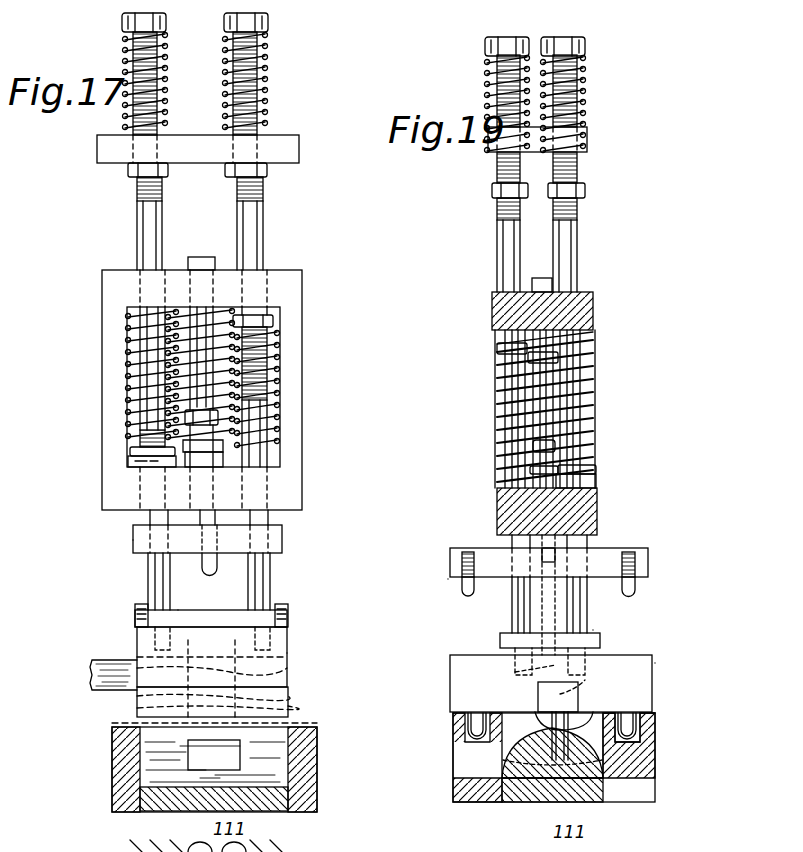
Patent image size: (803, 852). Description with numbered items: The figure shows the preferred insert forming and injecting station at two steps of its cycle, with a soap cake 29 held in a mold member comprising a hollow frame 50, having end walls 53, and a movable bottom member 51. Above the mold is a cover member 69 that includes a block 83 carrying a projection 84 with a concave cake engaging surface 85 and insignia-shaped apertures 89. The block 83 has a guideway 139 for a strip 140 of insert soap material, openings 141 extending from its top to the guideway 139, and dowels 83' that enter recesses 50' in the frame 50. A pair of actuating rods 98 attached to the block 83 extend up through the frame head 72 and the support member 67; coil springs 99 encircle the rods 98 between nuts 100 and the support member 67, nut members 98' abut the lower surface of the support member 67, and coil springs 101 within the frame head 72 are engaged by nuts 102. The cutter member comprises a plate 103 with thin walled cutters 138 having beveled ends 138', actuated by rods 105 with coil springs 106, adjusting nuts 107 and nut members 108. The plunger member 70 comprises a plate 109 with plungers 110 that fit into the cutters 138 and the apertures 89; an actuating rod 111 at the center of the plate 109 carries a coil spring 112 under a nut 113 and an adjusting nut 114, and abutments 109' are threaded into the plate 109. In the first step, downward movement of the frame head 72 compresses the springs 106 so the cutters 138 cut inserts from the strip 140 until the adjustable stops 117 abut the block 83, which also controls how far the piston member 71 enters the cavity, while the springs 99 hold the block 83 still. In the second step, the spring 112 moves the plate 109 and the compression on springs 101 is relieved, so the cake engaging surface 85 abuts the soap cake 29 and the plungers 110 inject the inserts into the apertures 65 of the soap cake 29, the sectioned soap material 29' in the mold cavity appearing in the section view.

In FIG. 17, the nuts 100 is at (225, 22).
In FIG. 19, the nuts 100 is at (552, 40).
In FIG. 17, the coil springs 99 is at (227, 75).
In FIG. 19, the coil springs 99 is at (586, 80).
In FIG. 17, the support member 67 is at (193, 142).
In FIG. 19, the support member 67 is at (587, 136).
In FIG. 17, the nut members 98' is at (197, 183).
In FIG. 19, the nut members 98' is at (544, 183).
In FIG. 17, the actuating rods 98 is at (198, 151).
In FIG. 19, the actuating rods 98 is at (537, 173).
In FIG. 17, the actuating rod 111 is at (258, 398).
In FIG. 19, the actuating rod 111 is at (535, 280).
In FIG. 17, the frame head 72 is at (300, 318).
In FIG. 19, the frame head 72 is at (593, 308).
In FIG. 17, the nuts 102 is at (270, 320).
In FIG. 19, the nuts 102 is at (497, 348).
In FIG. 17, the actuating rods 105 is at (148, 395).
In FIG. 19, the actuating rods 105 is at (595, 346).
In FIG. 17, the coil springs 106 is at (128, 342).
In FIG. 19, the coil springs 106 is at (595, 374).
In FIG. 17, the coil spring 112 is at (243, 350).
In FIG. 19, the coil spring 112 is at (497, 390).
In FIG. 17, the coil springs 101 is at (262, 370).
In FIG. 19, the coil springs 101 is at (497, 421).
In FIG. 17, the nut 113 is at (238, 425).
In FIG. 19, the nut 113 is at (497, 451).
In FIG. 17, the adjusting nut 114 is at (225, 455).
In FIG. 19, the adjusting nut 114 is at (535, 483).
In FIG. 17, the nuts 107 is at (133, 448).
In FIG. 19, the nuts 107 is at (598, 462).
In FIG. 17, the nut members 108 is at (128, 463).
In FIG. 19, the nut members 108 is at (598, 483).
In FIG. 17, the plate 109 is at (230, 531).
In FIG. 19, the plate 109 is at (530, 555).
In FIG. 17, the plunger member 70 is at (131, 540).
In FIG. 19, the plunger member 70 is at (447, 579).
In FIG. 17, the abutments 109' is at (265, 550).
In FIG. 19, the abutments 109' is at (579, 574).
In FIG. 17, the plungers 110 is at (228, 590).
In FIG. 19, the plungers 110 is at (553, 606).
In FIG. 17, the piston member 71 is at (178, 610).
In FIG. 19, the piston member 71 is at (593, 630).
In FIG. 17, the adjustable stops 117 is at (138, 606).
In FIG. 17, the plate 103 is at (288, 616).
In FIG. 19, the plate 103 is at (500, 640).
In FIG. 17, the strip 140 is at (108, 668).
In FIG. 19, the strip 140 is at (580, 683).
In FIG. 17, the block 83 is at (228, 671).
In FIG. 19, the block 83 is at (533, 680).
In FIG. 17, the cover member 69 is at (287, 653).
In FIG. 19, the cover member 69 is at (655, 663).
In FIG. 17, the openings 141 is at (112, 676).
In FIG. 19, the openings 141 is at (572, 700).
In FIG. 17, the cutters 138 is at (234, 671).
In FIG. 19, the cutters 138 is at (516, 682).
In FIG. 17, the beveled ends 138' is at (174, 700).
In FIG. 17, the projection 84 is at (280, 692).
In FIG. 19, the projection 84 is at (590, 722).
In FIG. 17, the apertures 89 is at (150, 712).
In FIG. 17, the cake engaging surface 85 is at (283, 716).
In FIG. 19, the cake engaging surface 85 is at (575, 780).
In FIG. 17, the hollow frame 50 is at (195, 769).
In FIG. 19, the hollow frame 50 is at (535, 757).
In FIG. 17, the apertures 65 is at (240, 757).
In FIG. 17, the soap cake 29 is at (181, 768).
In FIG. 19, the soap cake 29 is at (594, 753).
In FIG. 17, the end walls 53 is at (316, 780).
In FIG. 17, the bottom member 51 is at (150, 808).
In FIG. 19, the bottom member 51 is at (515, 800).
In FIG. 19, the dowels 83' is at (525, 726).
In FIG. 19, the recesses 50' is at (458, 757).
In FIG. 19, the guideway 139 is at (615, 718).
In FIG. 19, the molded body 29' is at (552, 795).